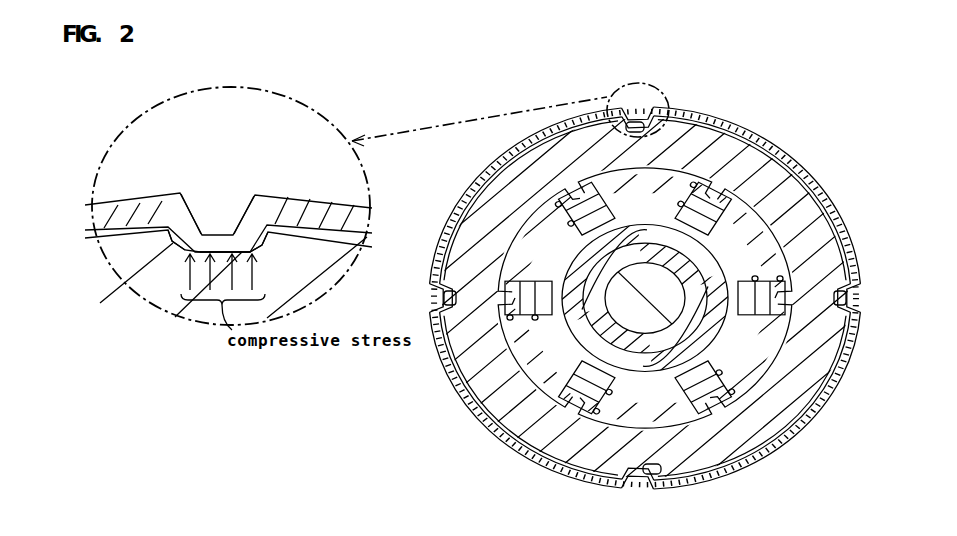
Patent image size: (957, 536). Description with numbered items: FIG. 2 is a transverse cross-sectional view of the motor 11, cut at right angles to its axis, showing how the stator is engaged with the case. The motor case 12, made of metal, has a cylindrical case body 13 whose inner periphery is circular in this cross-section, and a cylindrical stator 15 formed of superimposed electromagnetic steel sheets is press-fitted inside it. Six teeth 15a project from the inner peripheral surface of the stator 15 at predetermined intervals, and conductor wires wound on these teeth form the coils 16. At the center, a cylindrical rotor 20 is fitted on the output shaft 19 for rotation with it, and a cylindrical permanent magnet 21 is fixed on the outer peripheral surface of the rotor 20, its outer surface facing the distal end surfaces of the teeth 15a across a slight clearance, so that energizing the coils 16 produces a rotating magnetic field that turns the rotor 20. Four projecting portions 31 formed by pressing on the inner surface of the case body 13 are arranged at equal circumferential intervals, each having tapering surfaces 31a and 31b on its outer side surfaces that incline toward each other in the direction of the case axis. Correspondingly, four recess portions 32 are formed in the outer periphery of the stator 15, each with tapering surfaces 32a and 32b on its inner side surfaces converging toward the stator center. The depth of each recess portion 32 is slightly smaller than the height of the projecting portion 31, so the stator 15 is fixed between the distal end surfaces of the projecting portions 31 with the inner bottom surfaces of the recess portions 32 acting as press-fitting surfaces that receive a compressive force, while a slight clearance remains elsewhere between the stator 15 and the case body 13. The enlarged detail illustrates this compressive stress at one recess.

The motor 11 is at (764, 105).
The motor case 12 is at (783, 149).
The case body 13 is at (808, 171).
The stator 15 is at (818, 207).
The teeth 15a is at (597, 203).
The coils 16 is at (568, 222).
The output shaft 19 is at (690, 262).
The rotor 20 is at (580, 272).
The permanent magnet 21 is at (700, 343).
The projecting portions 31 is at (639, 100).
The tapering surface 31a is at (196, 207).
The tapering surface 31b is at (248, 215).
The recess portions 32 is at (845, 303).
The tapering surface 32a is at (183, 250).
The tapering surface 32b is at (267, 231).